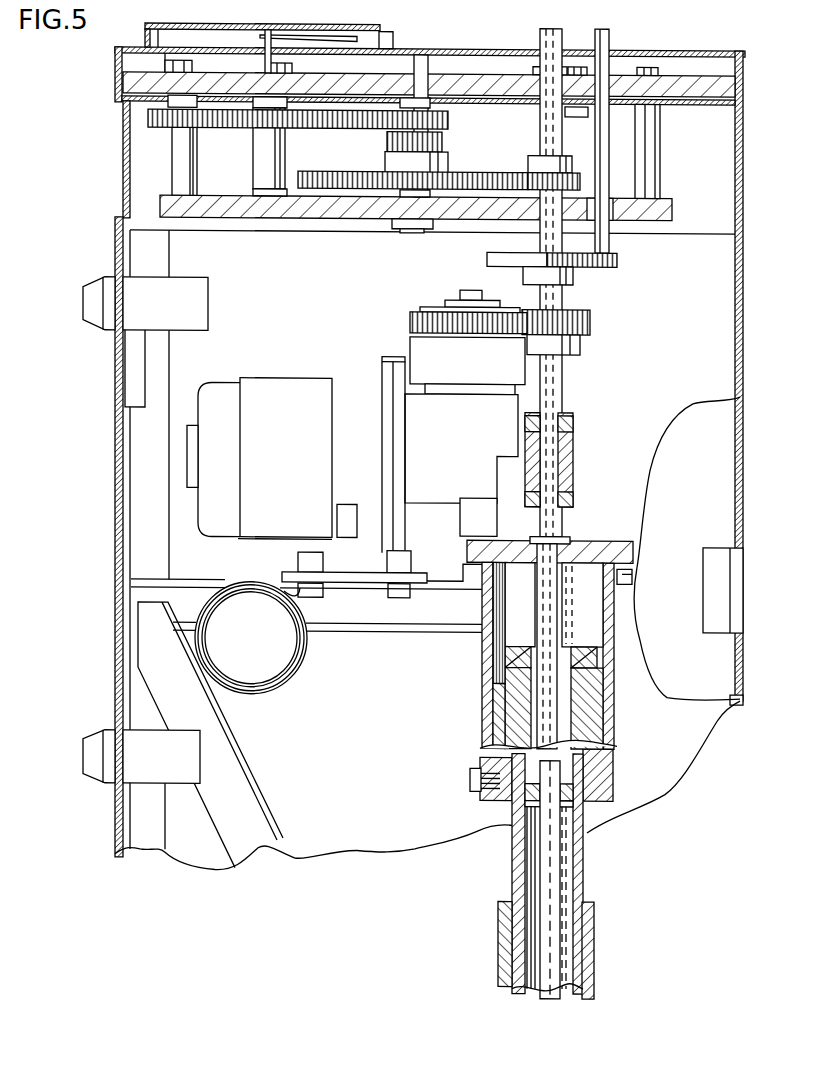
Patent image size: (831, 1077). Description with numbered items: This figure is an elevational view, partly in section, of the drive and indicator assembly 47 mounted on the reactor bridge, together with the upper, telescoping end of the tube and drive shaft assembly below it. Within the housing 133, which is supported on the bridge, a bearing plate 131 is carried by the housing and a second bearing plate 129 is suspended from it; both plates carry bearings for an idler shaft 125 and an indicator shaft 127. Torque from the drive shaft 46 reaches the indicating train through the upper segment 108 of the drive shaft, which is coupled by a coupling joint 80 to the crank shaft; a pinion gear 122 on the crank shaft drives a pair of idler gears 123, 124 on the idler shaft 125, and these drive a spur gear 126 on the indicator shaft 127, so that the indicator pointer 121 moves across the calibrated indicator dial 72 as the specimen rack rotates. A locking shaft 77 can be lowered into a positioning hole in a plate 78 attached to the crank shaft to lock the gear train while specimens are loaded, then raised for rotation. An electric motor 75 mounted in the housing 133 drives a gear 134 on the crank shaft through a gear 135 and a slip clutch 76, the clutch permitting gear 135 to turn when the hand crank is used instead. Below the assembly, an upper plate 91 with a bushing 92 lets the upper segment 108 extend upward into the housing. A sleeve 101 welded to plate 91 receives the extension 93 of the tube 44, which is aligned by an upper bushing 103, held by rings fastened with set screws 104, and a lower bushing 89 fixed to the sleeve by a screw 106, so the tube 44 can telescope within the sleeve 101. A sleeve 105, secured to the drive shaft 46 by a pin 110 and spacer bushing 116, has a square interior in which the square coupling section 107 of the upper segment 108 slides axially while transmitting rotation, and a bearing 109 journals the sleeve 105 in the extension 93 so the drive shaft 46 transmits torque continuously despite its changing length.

The indicator pointer 121 is at (291, 38).
The indicator dial 72 is at (373, 28).
The idler shaft 125 is at (423, 94).
The indicator shaft 127 is at (262, 163).
The spur gear 126 is at (325, 129).
The idler gear 124 is at (447, 115).
The locking shaft 77 is at (548, 126).
The idler gear 123 is at (513, 175).
The bearing plate 131 is at (667, 84).
The pinion gear 122 is at (580, 178).
The housing 133 is at (742, 164).
The bearing plate 129 is at (667, 203).
The drive and indicator assembly 47 is at (320, 285).
The plate 78 is at (613, 262).
The gear 134 is at (413, 324).
The gear 135 is at (590, 318).
The motor 75 is at (305, 397).
The coupling joint 80 is at (575, 458).
The slip clutch 76 is at (463, 492).
The upper segment of drive shaft 108 is at (543, 514).
The bushing 92 is at (545, 538).
The upper plate 91 is at (593, 543).
The coupling section 107 is at (565, 594).
The sleeve 105 is at (563, 619).
The bearing 109 is at (583, 641).
The bushing 103 is at (613, 678).
The set screw 104 is at (615, 698).
The sleeve 101 is at (482, 664).
The extension 93 is at (510, 699).
The tube 44 is at (520, 734).
The screw 106 is at (466, 780).
The bushing 89 is at (487, 798).
The spacer bushing 116 is at (560, 812).
The pin 110 is at (515, 813).
The drive shaft 46 is at (547, 859).